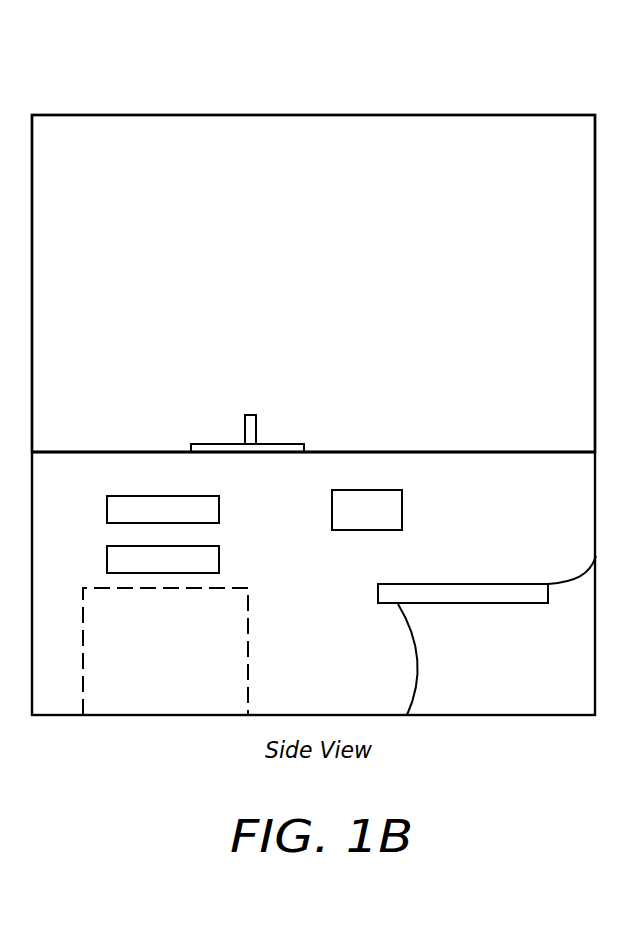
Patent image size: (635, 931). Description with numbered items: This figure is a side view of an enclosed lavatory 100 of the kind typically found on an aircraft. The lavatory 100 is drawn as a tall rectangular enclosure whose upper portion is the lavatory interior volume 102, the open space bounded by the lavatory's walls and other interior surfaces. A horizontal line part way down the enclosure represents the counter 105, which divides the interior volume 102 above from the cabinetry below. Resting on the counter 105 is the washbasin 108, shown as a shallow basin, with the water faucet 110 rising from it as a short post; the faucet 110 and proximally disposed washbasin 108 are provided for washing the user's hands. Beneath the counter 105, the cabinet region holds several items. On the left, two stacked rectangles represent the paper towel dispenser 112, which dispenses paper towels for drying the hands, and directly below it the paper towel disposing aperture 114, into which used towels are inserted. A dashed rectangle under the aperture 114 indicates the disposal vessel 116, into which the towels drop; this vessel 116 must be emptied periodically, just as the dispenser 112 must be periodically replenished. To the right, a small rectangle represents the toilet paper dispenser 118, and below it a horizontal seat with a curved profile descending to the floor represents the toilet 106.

The lavatory 100 is at (300, 80).
The lavatory interior volume 102 is at (313, 283).
The counter 105 is at (440, 450).
The toilet 106 is at (435, 655).
The washbasin 108 is at (208, 445).
The water faucet 110 is at (258, 427).
The paper towel dispenser 112 is at (205, 509).
The paper towel disposing aperture 114 is at (205, 560).
The disposal vessel 116 is at (249, 667).
The toilet paper dispenser 118 is at (392, 513).